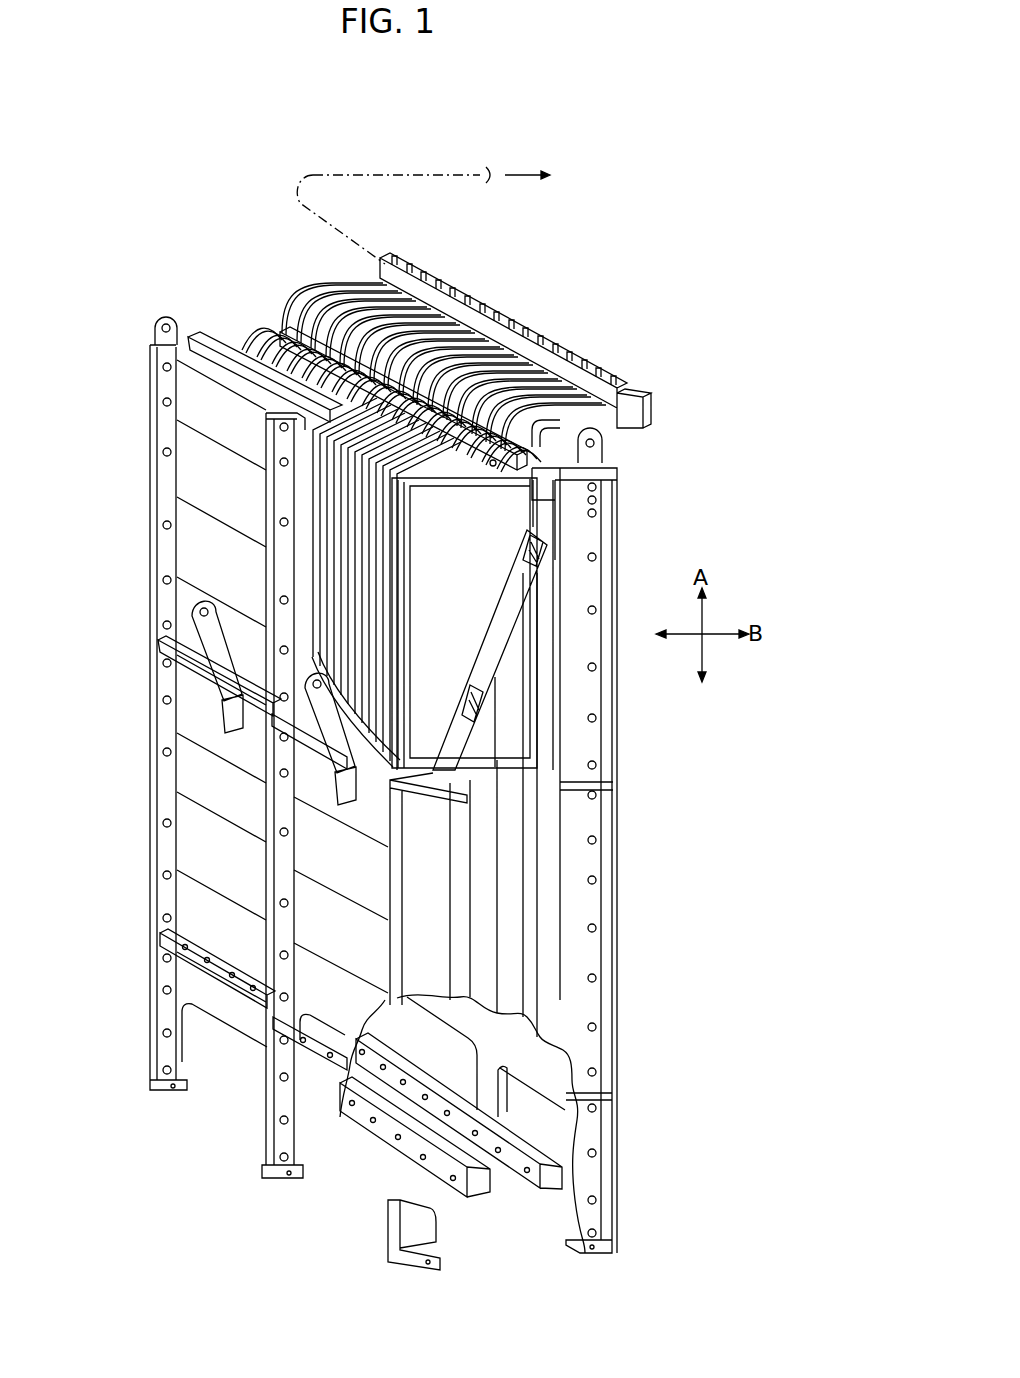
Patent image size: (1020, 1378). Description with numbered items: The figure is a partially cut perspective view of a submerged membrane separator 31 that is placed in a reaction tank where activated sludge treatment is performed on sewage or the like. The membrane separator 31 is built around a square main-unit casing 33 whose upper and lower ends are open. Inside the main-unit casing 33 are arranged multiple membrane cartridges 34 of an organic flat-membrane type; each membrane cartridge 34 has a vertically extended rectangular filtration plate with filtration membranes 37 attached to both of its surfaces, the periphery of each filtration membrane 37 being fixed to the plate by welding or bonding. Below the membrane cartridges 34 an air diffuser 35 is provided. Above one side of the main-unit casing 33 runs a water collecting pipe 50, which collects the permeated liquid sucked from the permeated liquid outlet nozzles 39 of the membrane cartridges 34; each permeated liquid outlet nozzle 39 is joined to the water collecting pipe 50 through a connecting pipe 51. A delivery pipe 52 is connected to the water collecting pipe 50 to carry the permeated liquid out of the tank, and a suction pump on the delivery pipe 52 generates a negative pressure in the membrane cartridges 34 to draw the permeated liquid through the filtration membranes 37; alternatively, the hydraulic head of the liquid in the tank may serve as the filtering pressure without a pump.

The membrane separator 31 is at (632, 573).
The main-unit casing 33 is at (586, 827).
The membrane cartridges 34 is at (358, 605).
The air diffuser 35 is at (548, 1200).
The filtration membranes 37 is at (505, 522).
The permeated liquid outlet nozzle 39 is at (548, 418).
The water collecting pipe 50 is at (630, 392).
The connecting pipe 51 is at (530, 357).
The delivery pipe 52 is at (428, 175).